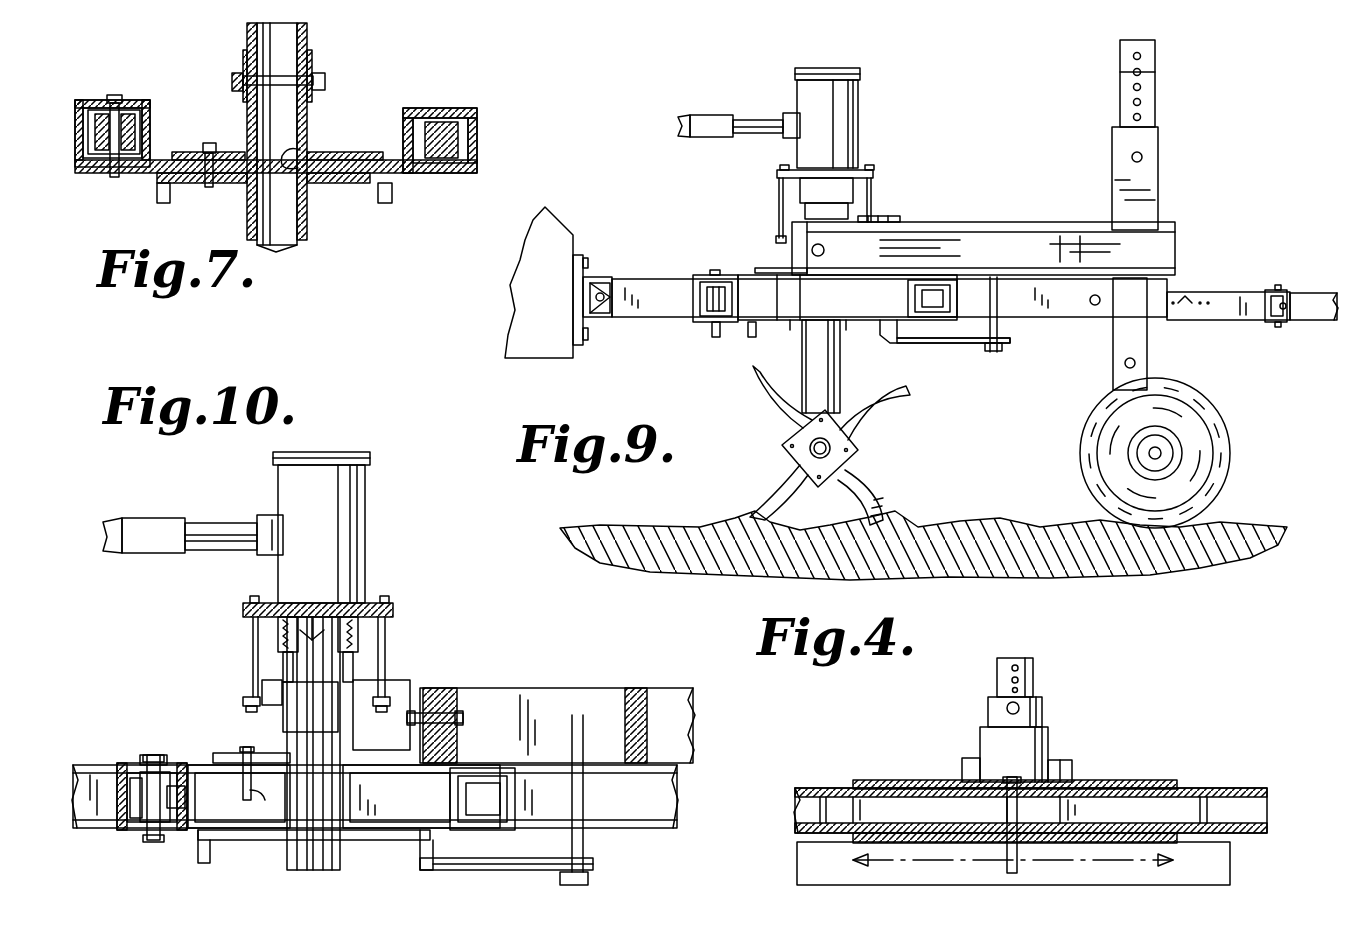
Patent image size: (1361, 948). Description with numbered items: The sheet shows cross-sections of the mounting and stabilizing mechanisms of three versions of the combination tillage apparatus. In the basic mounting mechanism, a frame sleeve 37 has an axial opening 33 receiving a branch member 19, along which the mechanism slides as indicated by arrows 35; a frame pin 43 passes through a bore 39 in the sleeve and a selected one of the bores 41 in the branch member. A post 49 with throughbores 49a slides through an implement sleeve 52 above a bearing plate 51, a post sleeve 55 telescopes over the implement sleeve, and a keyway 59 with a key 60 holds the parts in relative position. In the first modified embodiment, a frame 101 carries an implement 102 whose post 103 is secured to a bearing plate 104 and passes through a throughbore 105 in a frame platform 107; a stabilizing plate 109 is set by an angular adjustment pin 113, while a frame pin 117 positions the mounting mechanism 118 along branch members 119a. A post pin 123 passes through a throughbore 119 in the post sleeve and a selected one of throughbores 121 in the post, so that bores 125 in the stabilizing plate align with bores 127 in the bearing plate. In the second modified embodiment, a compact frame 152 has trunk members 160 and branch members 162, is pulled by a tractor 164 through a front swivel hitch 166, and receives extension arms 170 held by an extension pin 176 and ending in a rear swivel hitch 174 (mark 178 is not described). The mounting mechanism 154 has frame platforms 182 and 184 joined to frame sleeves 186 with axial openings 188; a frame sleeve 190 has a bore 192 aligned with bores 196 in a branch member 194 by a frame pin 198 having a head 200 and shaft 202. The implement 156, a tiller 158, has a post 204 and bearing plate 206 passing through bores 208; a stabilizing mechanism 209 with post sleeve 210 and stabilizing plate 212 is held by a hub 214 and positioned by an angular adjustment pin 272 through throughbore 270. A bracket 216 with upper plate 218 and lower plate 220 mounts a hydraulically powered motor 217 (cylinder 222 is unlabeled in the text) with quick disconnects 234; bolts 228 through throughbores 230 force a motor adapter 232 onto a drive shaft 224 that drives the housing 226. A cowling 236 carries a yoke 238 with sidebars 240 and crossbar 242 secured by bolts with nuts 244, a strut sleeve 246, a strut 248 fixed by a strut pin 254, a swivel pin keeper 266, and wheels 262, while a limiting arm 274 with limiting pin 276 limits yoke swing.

In FIG. 7, the frame 101 is at (455, 108).
In FIG. 7, the implement 102 is at (303, 234).
In FIG. 7, the post 103 is at (250, 36).
In FIG. 7, the bearing plate 104 is at (386, 203).
In FIG. 7, the throughbore 105 is at (300, 150).
In FIG. 7, the frame platform 107 is at (412, 173).
In FIG. 7, the stabilizing plate 109 is at (180, 152).
In FIG. 7, the angular adjustment pin 113 is at (210, 143).
In FIG. 7, the frame pin 117 is at (113, 95).
In FIG. 7, the mounting mechanism 118 is at (142, 100).
In FIG. 7, the diametric throughbore 119 is at (313, 64).
In FIG. 7, the branch members 119a is at (100, 166).
In FIG. 7, the diametric throughbores 121 is at (280, 80).
In FIG. 7, the post pin 123 is at (232, 82).
In FIG. 7, the bores 125 is at (342, 152).
In FIG. 7, the bores 127 is at (355, 183).
In FIG. 10, the compact frame 152 is at (678, 800).
In FIG. 9, the mounting mechanism 154 is at (740, 322).
In FIG. 10, the mounting mechanism 154 is at (195, 765).
In FIG. 9, the implement 156 is at (840, 370).
In FIG. 9, the tiller 158 is at (848, 448).
In FIG. 9, the trunk members 160 is at (662, 317).
In FIG. 9, the branch members 162 is at (915, 298).
In FIG. 10, the branch members 162 is at (458, 810).
In FIG. 9, the tractor 164 is at (553, 222).
In FIG. 9, the front swivel hitch 166 is at (600, 277).
In FIG. 9, the extension arm 170 is at (1242, 320).
In FIG. 9, the rear swivel hitch 174 is at (1272, 290).
In FIG. 9, the extension pin 176 is at (1095, 305).
In FIG. 9, the index marks 178 is at (1186, 296).
In FIG. 10, the frame platform 182 is at (205, 863).
In FIG. 10, the frame platform 184 is at (222, 753).
In FIG. 10, the frame sleeves 186 is at (490, 760).
In FIG. 10, the axial opening 188 is at (130, 826).
In FIG. 10, the frame sleeve 190 is at (85, 770).
In FIG. 10, the bore 192 is at (150, 842).
In FIG. 10, the branch member 194 is at (160, 755).
In FIG. 10, the bores 196 is at (165, 810).
In FIG. 9, the frame pin 198 is at (712, 270).
In FIG. 10, the head 200 is at (140, 778).
In FIG. 10, the shaft 202 is at (127, 773).
In FIG. 9, the post 204 is at (805, 362).
In FIG. 10, the post 204 is at (340, 672).
In FIG. 9, the bearing plate 206 is at (888, 340).
In FIG. 10, the bearing plate 206 is at (420, 855).
In FIG. 10, the bores 208 is at (348, 797).
In FIG. 10, the stabilizing mechanism 209 is at (353, 722).
In FIG. 10, the post sleeve 210 is at (353, 655).
In FIG. 9, the stabilizing plate 212 is at (766, 266).
In FIG. 9, the hub 214 is at (798, 192).
In FIG. 10, the hub 214 is at (358, 630).
In FIG. 10, the bracket 216 is at (245, 606).
In FIG. 9, the hydraulically powered motor 217 is at (858, 132).
In FIG. 10, the upper plate 218 is at (392, 606).
In FIG. 10, the lower plate 220 is at (262, 697).
In FIG. 10, the hydraulic cylinder 222 is at (358, 483).
In FIG. 10, the drive shaft 224 is at (287, 855).
In FIG. 9, the housing 226 is at (855, 422).
In FIG. 9, the bolts 228 is at (872, 197).
In FIG. 10, the bolts 228 is at (253, 650).
In FIG. 10, the throughbores 230 is at (253, 626).
In FIG. 10, the motor adapter 232 is at (312, 617).
In FIG. 9, the quick disconnects 234 is at (700, 115).
In FIG. 10, the quick disconnects 234 is at (150, 525).
In FIG. 9, the cowling 236 is at (900, 219).
In FIG. 10, the cowling 236 is at (445, 688).
In FIG. 9, the yoke 238 is at (1003, 232).
In FIG. 9, the sidebars 240 is at (1050, 232).
In FIG. 10, the crossbar 242 is at (465, 688).
In FIG. 9, the bolts with nuts 244 is at (822, 254).
In FIG. 10, the bolts with nuts 244 is at (463, 716).
In FIG. 9, the strut sleeve 246 is at (1158, 160).
In FIG. 9, the strut 248 is at (1147, 349).
In FIG. 9, the strut pin 254 is at (1132, 158).
In FIG. 9, the wheels 262 is at (1228, 430).
In FIG. 9, the swivel pin keeper 266 is at (1124, 367).
In FIG. 10, the throughbore 270 is at (243, 785).
In FIG. 10, the angular adjustment pin 272 is at (262, 798).
In FIG. 9, the limiting arm 274 is at (960, 345).
In FIG. 10, the limiting arm 274 is at (593, 866).
In FIG. 9, the limiting pin 276 is at (1000, 340).
In FIG. 10, the limiting pin 276 is at (583, 718).
In FIG. 4, the branch member 19 is at (1232, 797).
In FIG. 4, the axial opening 33 is at (1148, 797).
In FIG. 4, the arrows 35 is at (910, 858).
In FIG. 4, the frame sleeve 37 is at (1155, 782).
In FIG. 4, the bore 39 is at (1007, 810).
In FIG. 4, the bores 41 is at (915, 795).
In FIG. 4, the frame pin 43 is at (1012, 777).
In FIG. 4, the post 49 is at (997, 676).
In FIG. 4, the throughbores 49a is at (1016, 664).
In FIG. 4, the bearing plate 51 is at (1218, 872).
In FIG. 4, the implement sleeve 52 is at (1045, 706).
In FIG. 4, the post sleeve 55 is at (1050, 742).
In FIG. 4, the keyway 59 is at (1065, 765).
In FIG. 4, the key 60 is at (960, 770).